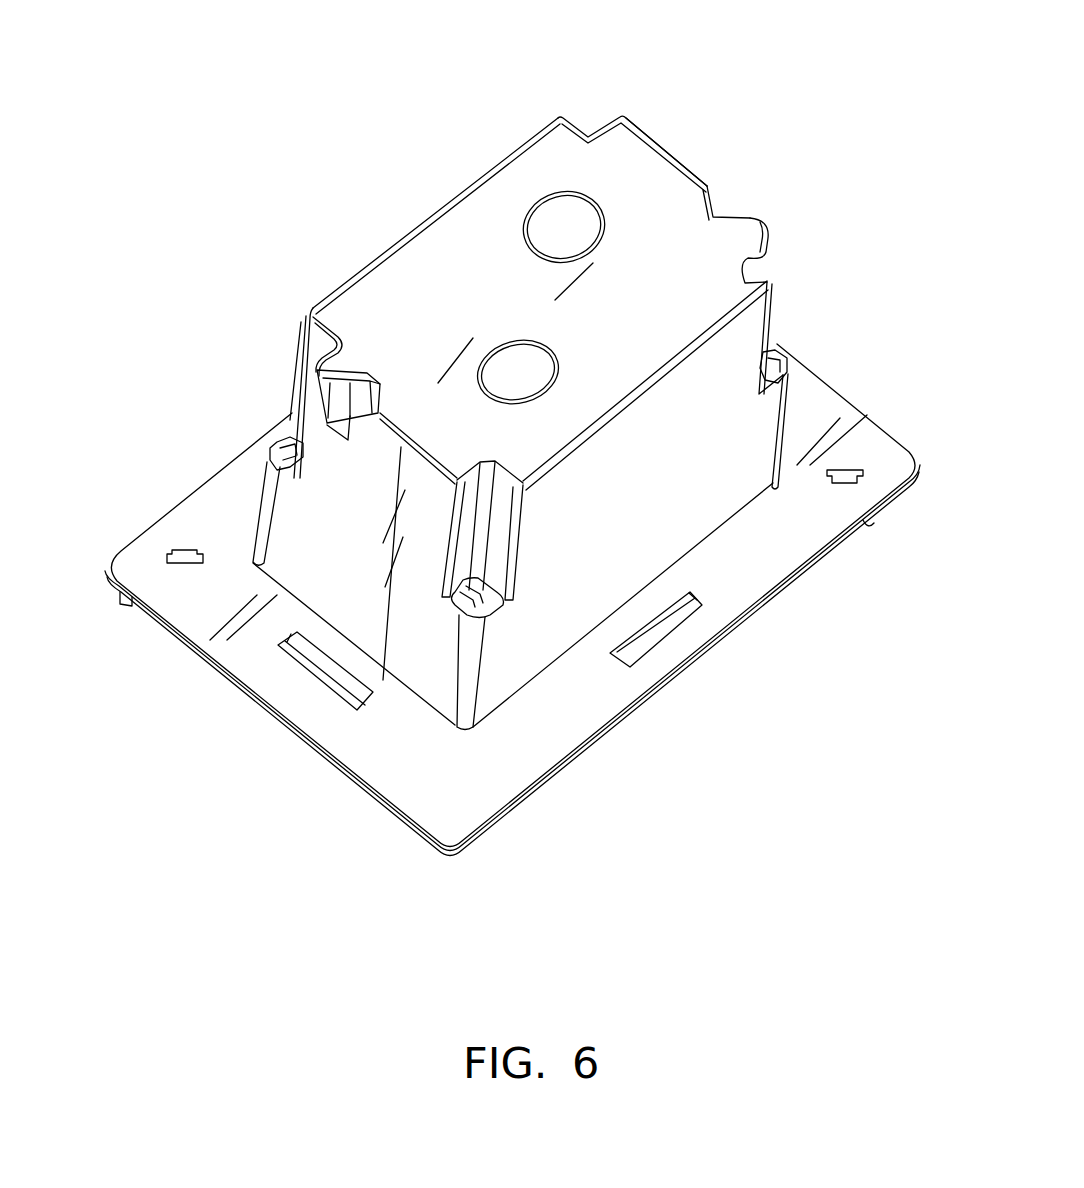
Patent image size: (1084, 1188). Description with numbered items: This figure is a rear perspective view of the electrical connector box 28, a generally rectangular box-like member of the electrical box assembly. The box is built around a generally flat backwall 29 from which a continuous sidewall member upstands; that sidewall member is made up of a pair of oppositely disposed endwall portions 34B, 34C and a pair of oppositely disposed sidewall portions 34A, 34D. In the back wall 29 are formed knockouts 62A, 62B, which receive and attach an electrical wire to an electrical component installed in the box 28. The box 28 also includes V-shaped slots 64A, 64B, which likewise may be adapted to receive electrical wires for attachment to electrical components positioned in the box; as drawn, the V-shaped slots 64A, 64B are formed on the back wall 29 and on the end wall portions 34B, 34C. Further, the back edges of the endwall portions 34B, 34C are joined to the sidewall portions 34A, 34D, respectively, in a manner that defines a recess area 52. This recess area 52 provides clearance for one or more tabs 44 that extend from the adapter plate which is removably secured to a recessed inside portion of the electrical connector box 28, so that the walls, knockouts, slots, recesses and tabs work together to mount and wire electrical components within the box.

The electrical connector box 28 is at (845, 543).
The backwall 29 is at (413, 283).
The sidewall portion 34A is at (693, 502).
The endwall portion 34B is at (667, 147).
The endwall portion 34C is at (367, 612).
The sidewall portion 34D is at (480, 175).
The tabs 44 is at (277, 447).
The recess area 52 is at (318, 345).
The knockout 62A is at (563, 218).
The knockout 62B is at (518, 366).
The V-shaped slot 64A is at (348, 428).
The V-shaped slot 64B is at (713, 217).